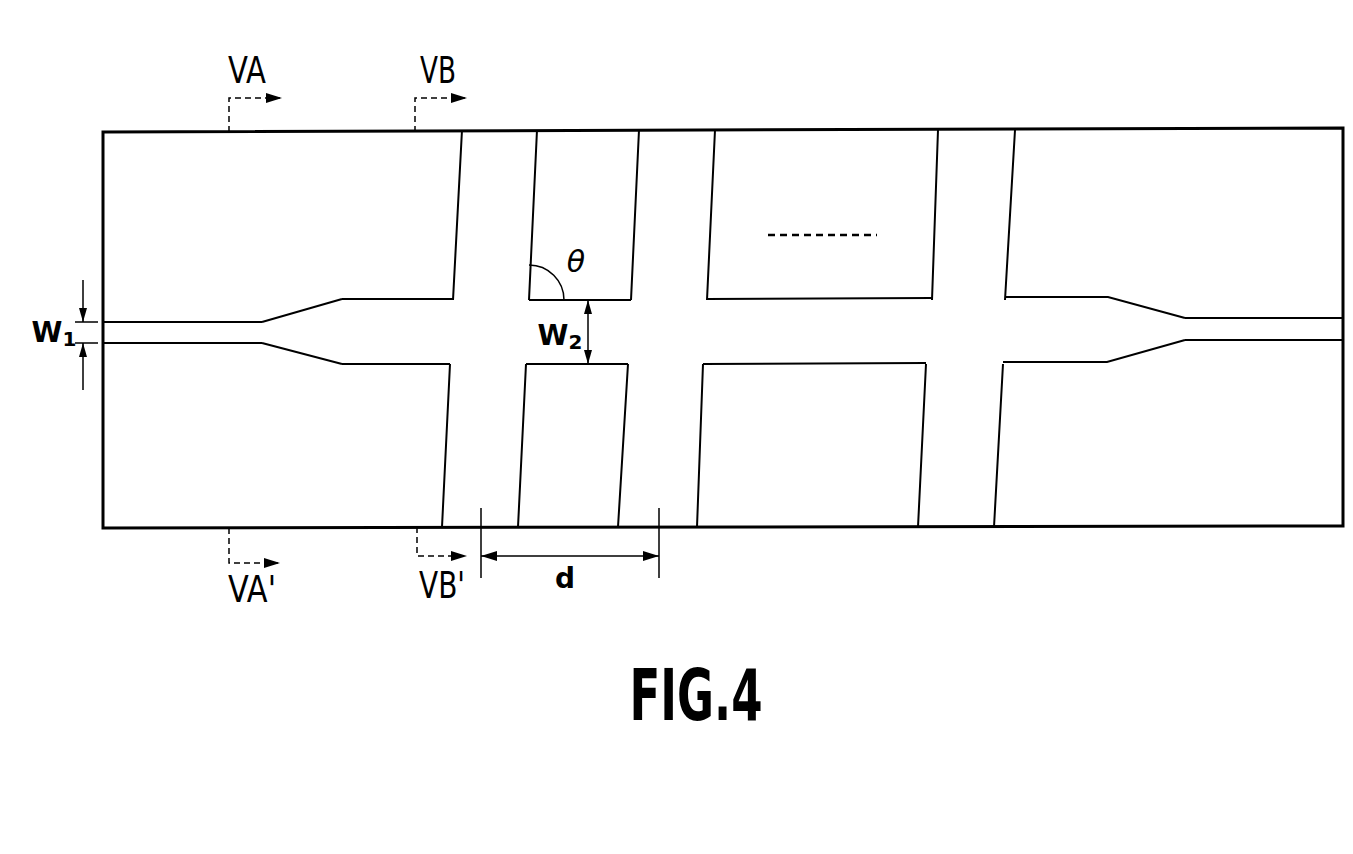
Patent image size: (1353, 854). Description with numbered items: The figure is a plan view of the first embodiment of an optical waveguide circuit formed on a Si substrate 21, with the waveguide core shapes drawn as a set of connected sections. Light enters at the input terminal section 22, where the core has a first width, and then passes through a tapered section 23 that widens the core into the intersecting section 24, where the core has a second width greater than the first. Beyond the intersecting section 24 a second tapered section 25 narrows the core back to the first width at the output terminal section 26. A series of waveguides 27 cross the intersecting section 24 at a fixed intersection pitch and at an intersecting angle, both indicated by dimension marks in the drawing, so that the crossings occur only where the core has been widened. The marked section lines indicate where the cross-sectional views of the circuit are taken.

The Si substrate 21 is at (125, 131).
The input terminal section 22 is at (172, 320).
The tapered section 23 is at (303, 320).
The intersecting section 24 is at (372, 305).
The tapered section 25 is at (1141, 320).
The output terminal section 26 is at (1292, 326).
The waveguide 27 is at (496, 140).